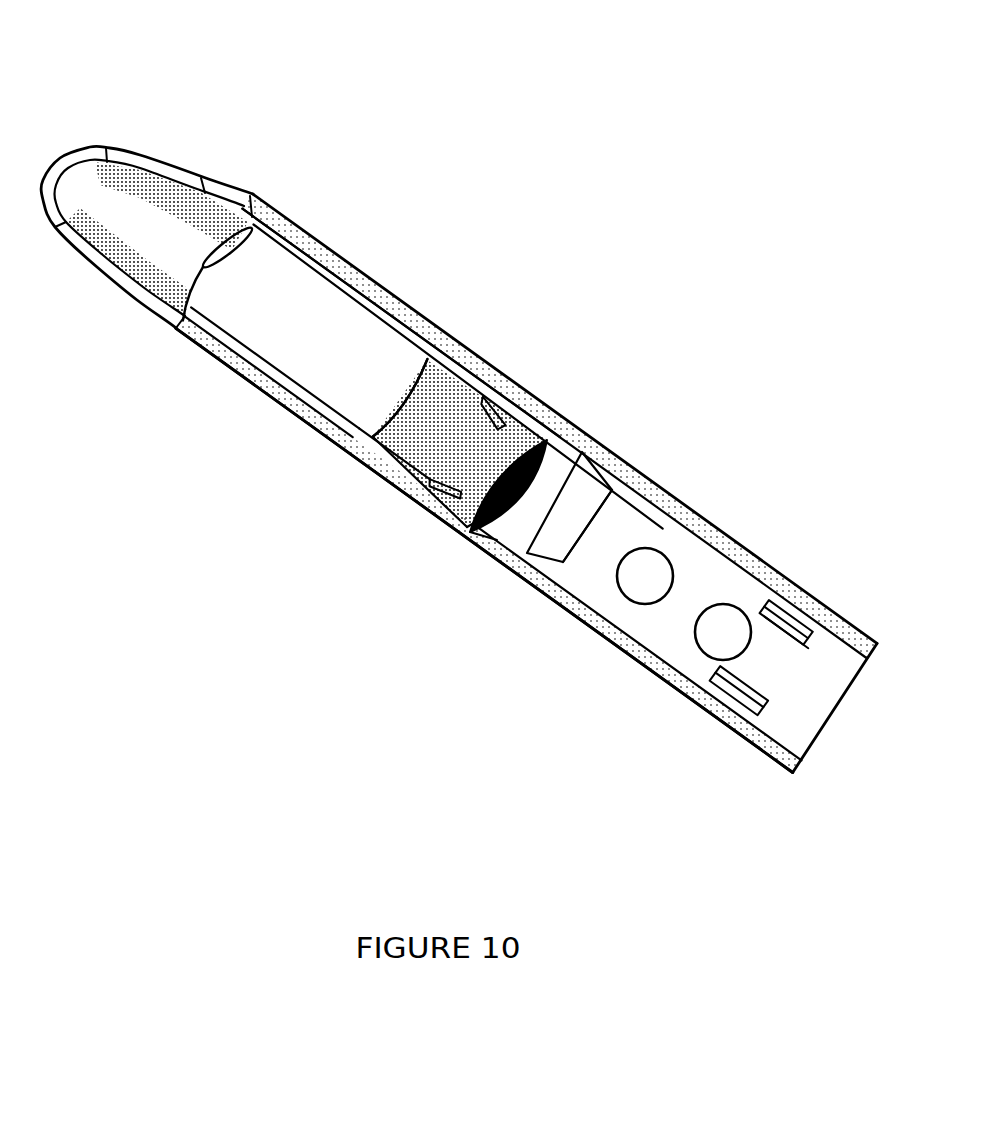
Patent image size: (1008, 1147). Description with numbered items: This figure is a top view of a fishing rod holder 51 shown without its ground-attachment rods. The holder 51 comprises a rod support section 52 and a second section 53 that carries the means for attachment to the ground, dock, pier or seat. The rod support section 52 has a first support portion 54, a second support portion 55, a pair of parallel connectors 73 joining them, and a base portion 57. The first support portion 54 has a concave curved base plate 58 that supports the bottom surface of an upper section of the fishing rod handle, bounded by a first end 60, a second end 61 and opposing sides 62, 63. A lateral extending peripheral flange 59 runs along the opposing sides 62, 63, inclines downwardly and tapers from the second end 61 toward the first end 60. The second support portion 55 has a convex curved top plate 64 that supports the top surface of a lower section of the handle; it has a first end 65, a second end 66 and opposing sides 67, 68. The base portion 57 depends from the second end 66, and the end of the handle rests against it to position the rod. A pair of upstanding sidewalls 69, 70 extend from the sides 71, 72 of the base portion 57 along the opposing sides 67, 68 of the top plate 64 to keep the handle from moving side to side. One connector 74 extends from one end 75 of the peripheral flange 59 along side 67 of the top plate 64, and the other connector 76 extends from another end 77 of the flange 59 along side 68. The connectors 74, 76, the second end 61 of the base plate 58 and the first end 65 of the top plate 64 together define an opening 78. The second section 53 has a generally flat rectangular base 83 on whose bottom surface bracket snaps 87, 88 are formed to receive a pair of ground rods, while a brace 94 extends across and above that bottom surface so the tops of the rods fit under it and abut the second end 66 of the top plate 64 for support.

The fishing rod holder 51 is at (537, 268).
The rod support section 52 is at (422, 296).
The second section 53 is at (742, 495).
The first support portion 54 is at (152, 130).
The second support portion 55 is at (372, 493).
The base portion 57 is at (497, 540).
The concave curved base plate 58 is at (133, 237).
The lateral extending peripheral flange 59 is at (183, 160).
The first end 60 is at (57, 172).
The second end 61 is at (253, 228).
The opposing side 62 is at (212, 177).
The opposing side 63 is at (127, 280).
The convex curved top plate 64 is at (433, 400).
The first end 65 is at (407, 417).
The second end 66 is at (533, 477).
The opposing side 67 is at (457, 382).
The opposing side 68 is at (413, 463).
The upstanding sidewall 69 is at (453, 502).
The upstanding sidewall 70 is at (510, 413).
The side 71 is at (463, 540).
The side 72 is at (527, 470).
The parallel connectors 73 is at (205, 412).
The connector 74 is at (318, 249).
The end of lateral extending peripheral flange 75 is at (257, 200).
The connector 76 is at (263, 395).
The end of lateral extending peripheral flange 77 is at (183, 322).
The opening 78 is at (305, 315).
The base 83 is at (687, 587).
The bracket snap 87 is at (787, 620).
The bracket snap 88 is at (733, 693).
The brace 94 is at (557, 540).